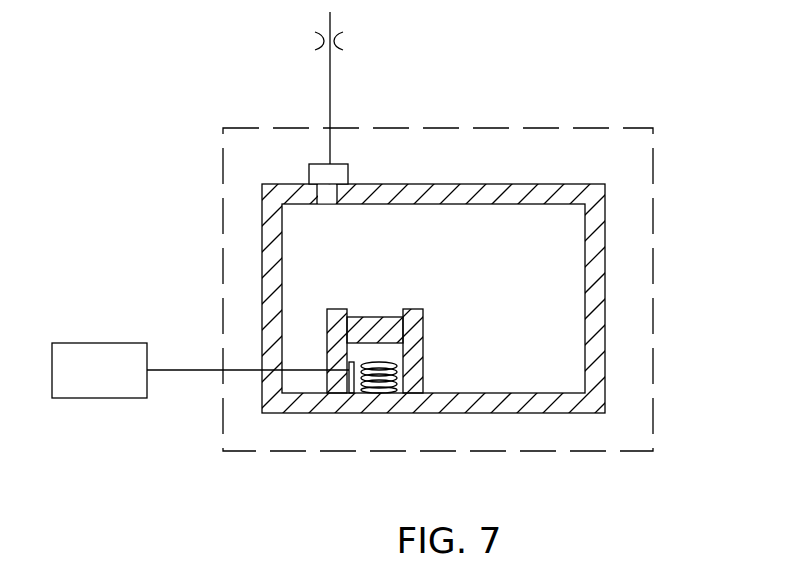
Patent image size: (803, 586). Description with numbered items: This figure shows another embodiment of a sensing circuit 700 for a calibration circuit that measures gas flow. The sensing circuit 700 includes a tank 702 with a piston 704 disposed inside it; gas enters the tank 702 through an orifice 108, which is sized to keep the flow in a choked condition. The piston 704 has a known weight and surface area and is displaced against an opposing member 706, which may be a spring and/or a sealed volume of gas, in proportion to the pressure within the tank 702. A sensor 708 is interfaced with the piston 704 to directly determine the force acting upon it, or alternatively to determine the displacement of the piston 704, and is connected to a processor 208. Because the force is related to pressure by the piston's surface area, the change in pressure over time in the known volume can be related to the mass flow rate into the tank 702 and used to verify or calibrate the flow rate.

The orifice 108 is at (306, 47).
The processor 208 is at (80, 384).
The sensing circuit 700 is at (575, 128).
The tank 702 is at (460, 184).
The piston 704 is at (381, 318).
The opposing member 706 is at (388, 390).
The sensor 708 is at (349, 393).